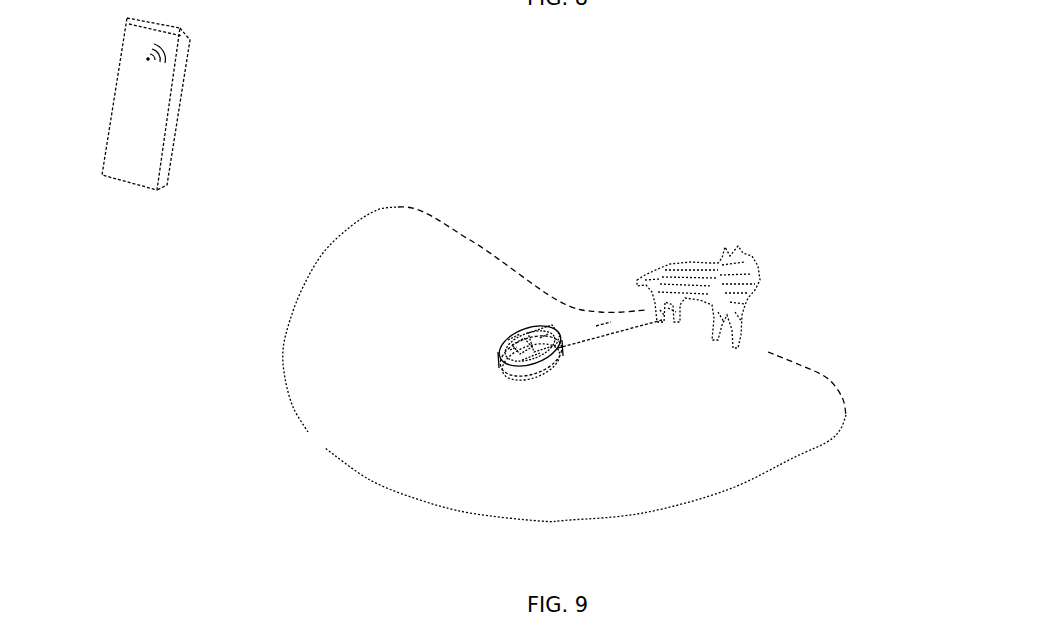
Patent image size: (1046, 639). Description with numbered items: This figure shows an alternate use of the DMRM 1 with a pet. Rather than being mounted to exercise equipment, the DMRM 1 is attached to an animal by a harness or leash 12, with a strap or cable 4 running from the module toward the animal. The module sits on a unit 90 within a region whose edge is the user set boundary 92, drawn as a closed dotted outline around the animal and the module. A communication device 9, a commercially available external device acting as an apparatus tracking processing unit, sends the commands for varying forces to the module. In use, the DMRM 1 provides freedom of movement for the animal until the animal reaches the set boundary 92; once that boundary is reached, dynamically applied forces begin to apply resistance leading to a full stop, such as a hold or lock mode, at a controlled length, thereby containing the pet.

The communication device 9 is at (140, 96).
The set boundary 92 is at (393, 200).
The DMRM 1 is at (528, 412).
The base station / docking device 90 is at (532, 385).
The strap or cable 4 is at (590, 332).
The harness or leash 12 is at (737, 292).